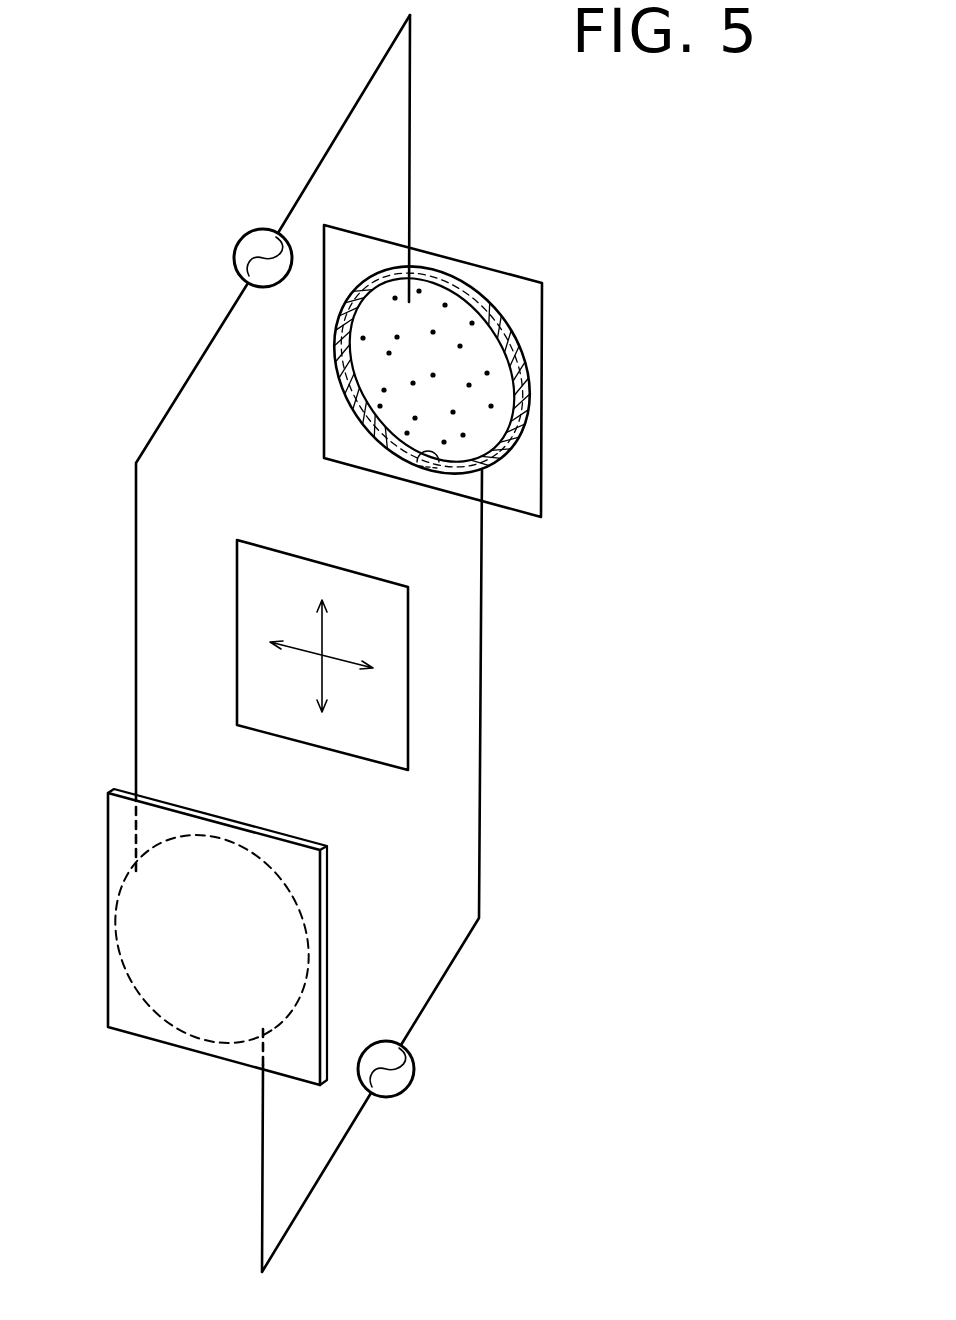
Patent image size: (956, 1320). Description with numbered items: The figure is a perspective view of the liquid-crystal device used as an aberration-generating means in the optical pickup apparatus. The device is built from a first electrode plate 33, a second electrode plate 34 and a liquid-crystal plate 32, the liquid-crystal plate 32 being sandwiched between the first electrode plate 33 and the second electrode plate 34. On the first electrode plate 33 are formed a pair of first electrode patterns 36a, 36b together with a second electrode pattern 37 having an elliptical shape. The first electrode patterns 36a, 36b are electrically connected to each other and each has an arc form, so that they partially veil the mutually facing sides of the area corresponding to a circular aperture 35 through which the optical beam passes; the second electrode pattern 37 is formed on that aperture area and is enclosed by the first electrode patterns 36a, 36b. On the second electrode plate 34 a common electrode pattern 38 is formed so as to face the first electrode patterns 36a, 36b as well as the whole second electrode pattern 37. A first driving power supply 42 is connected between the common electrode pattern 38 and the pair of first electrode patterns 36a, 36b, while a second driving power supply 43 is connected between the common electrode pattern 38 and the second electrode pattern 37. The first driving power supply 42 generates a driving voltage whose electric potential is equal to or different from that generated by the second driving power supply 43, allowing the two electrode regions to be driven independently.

The liquid-crystal plate 32 is at (270, 543).
The first electrode plate 33 is at (360, 230).
The second electrode plate 34 is at (183, 805).
The circular aperture 35 is at (437, 469).
The first electrode pattern 36a is at (340, 388).
The first electrode pattern 36b is at (527, 415).
The second electrode pattern 37 is at (460, 318).
The common electrode pattern 38 is at (133, 927).
The first driving power supply 42 is at (408, 1092).
The second driving power supply 43 is at (235, 252).